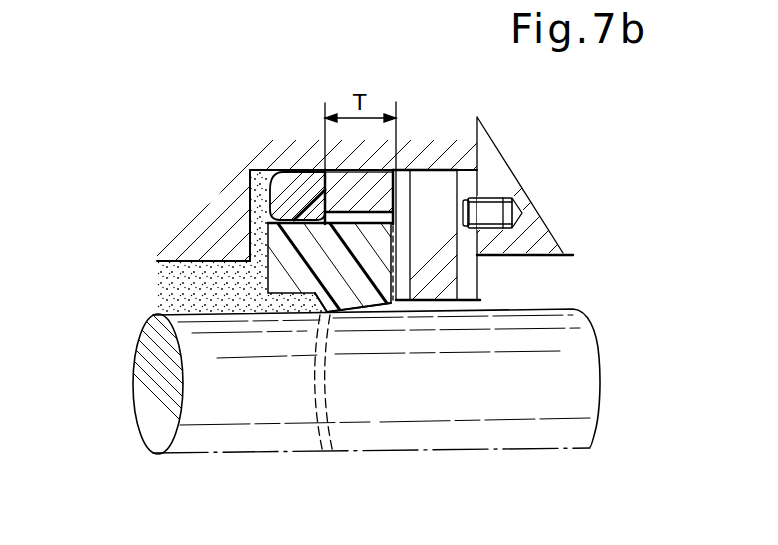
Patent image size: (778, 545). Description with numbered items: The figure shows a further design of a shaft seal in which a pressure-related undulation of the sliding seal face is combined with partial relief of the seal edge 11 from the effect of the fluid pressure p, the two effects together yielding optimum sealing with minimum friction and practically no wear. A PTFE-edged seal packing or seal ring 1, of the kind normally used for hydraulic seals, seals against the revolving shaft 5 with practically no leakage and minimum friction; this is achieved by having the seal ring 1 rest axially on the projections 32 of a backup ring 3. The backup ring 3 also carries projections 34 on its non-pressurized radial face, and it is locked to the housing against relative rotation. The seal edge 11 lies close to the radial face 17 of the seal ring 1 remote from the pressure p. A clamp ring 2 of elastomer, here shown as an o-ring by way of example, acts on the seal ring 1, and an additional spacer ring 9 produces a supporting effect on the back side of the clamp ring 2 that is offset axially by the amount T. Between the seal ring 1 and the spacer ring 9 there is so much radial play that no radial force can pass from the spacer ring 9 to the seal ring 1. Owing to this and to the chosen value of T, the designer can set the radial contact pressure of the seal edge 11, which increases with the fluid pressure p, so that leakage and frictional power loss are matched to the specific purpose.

The seal ring 1 is at (357, 286).
The clamp ring 2 is at (288, 170).
The backup ring 3 is at (473, 166).
The shaft 5 is at (528, 341).
The spacer ring 9 is at (360, 192).
The seal edge 11 is at (326, 306).
The radial face 17 is at (483, 280).
The projections 32 is at (403, 168).
The projections 34 is at (468, 188).
The pressure p is at (200, 286).